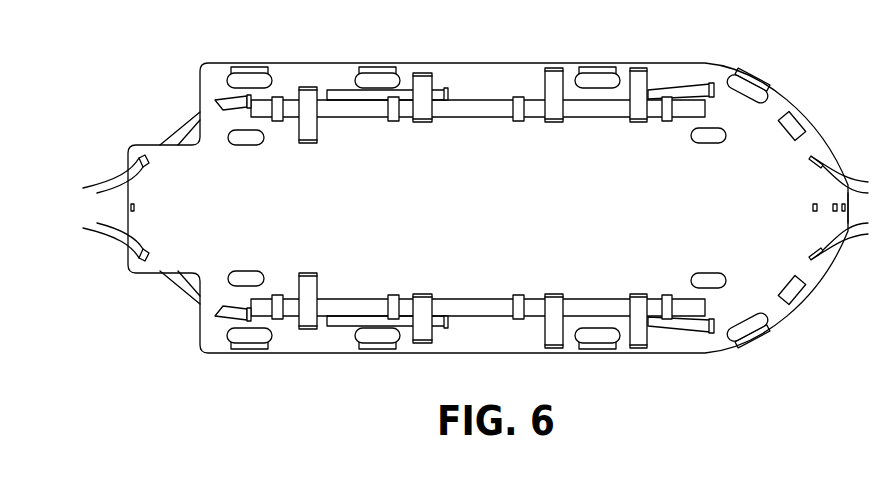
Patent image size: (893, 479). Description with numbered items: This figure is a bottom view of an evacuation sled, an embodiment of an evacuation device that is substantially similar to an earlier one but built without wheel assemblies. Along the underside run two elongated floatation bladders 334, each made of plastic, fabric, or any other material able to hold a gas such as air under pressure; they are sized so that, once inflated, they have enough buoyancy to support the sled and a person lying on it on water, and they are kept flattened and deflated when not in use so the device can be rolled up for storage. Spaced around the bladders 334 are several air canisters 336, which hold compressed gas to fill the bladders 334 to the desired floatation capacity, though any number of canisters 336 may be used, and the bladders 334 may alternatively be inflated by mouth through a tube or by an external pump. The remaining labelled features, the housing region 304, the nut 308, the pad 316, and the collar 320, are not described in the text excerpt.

The housing 304 is at (184, 129).
The nut 308 is at (304, 288).
The mounting pad 316 is at (232, 80).
The collar 320 is at (665, 298).
The floatation bladder 334 is at (592, 118).
The air canister 336 is at (253, 145).